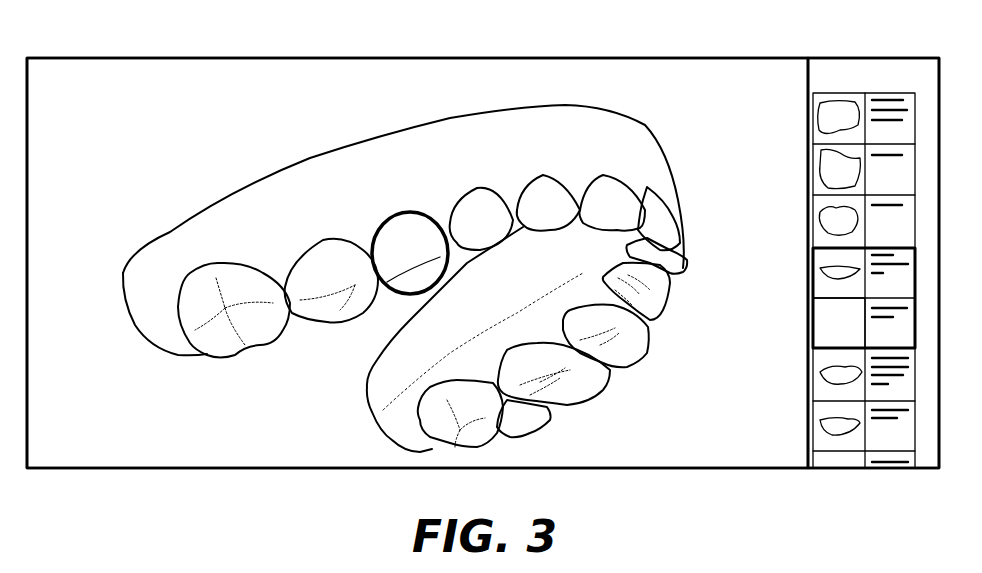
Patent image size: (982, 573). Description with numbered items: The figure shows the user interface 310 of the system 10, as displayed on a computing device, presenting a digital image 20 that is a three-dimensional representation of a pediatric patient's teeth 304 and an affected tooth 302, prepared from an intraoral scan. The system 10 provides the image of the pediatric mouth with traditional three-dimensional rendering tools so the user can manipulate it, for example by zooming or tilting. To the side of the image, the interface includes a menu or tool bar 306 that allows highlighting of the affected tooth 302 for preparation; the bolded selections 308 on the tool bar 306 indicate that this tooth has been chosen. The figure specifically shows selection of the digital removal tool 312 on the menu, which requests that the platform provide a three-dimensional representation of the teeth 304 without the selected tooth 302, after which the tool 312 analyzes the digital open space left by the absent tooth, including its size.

The system 10 is at (225, 27).
The digital image 20 is at (207, 168).
The affected tooth 302 is at (403, 213).
The pediatric patient's teeth 304 is at (275, 382).
The tool bar 306 is at (873, 44).
The bolded selections 308 is at (814, 308).
The user interface 310 is at (648, 42).
The digital removal tool 312 is at (823, 330).